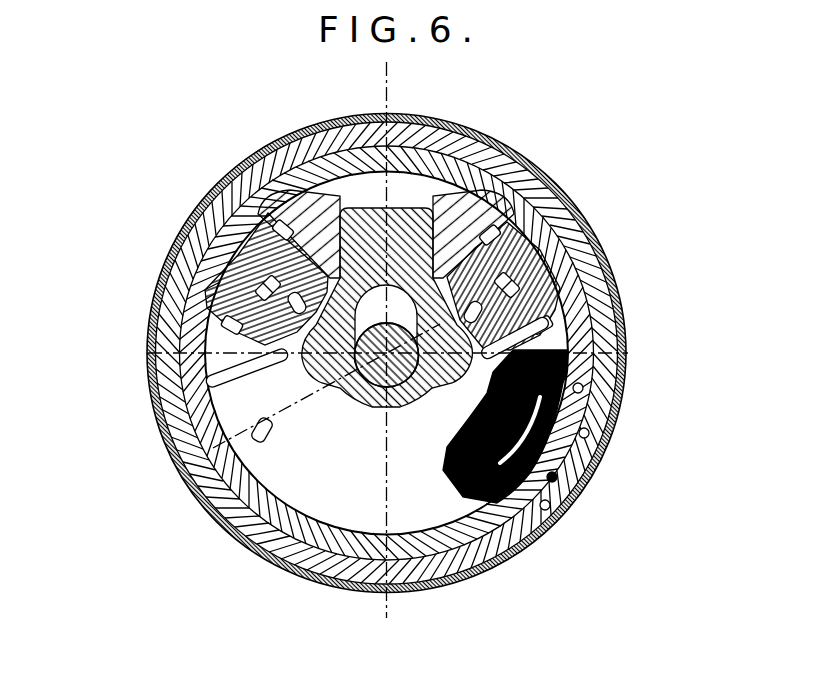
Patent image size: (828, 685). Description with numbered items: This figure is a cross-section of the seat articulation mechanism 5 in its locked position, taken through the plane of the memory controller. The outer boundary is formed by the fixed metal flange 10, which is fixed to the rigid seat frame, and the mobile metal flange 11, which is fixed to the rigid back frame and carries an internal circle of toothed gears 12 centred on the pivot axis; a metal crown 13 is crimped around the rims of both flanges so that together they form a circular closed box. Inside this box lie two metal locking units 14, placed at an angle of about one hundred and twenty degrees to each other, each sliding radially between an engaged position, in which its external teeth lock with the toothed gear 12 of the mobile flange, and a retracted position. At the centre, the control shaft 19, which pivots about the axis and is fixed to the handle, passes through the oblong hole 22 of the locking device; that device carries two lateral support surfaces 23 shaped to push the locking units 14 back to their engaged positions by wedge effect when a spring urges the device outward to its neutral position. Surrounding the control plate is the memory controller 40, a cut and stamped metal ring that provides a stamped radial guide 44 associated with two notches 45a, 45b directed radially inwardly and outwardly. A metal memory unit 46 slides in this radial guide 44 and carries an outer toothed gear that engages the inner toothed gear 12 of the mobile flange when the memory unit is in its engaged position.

The mechanism 5 is at (136, 431).
The fixed metal flange 10 is at (520, 180).
The mobile metal flange 11 is at (523, 210).
The toothed gear 12 is at (430, 178).
The metal crown 13 is at (505, 152).
The locking units 14 is at (232, 278).
The control shaft 19 is at (408, 402).
The oblong hole 22 is at (338, 272).
The lateral support surfaces 23 is at (245, 208).
The memory controller 40 is at (575, 357).
The radial guide 44 is at (583, 483).
The notch 45a is at (548, 508).
The notch 45b is at (588, 385).
The memory unit 46 is at (590, 432).